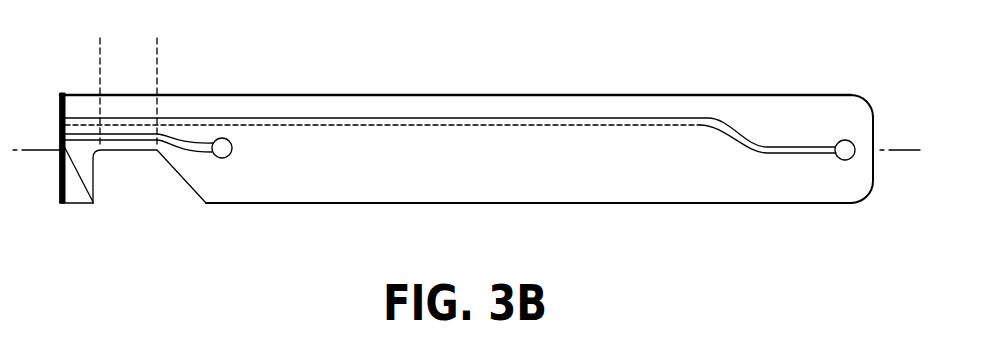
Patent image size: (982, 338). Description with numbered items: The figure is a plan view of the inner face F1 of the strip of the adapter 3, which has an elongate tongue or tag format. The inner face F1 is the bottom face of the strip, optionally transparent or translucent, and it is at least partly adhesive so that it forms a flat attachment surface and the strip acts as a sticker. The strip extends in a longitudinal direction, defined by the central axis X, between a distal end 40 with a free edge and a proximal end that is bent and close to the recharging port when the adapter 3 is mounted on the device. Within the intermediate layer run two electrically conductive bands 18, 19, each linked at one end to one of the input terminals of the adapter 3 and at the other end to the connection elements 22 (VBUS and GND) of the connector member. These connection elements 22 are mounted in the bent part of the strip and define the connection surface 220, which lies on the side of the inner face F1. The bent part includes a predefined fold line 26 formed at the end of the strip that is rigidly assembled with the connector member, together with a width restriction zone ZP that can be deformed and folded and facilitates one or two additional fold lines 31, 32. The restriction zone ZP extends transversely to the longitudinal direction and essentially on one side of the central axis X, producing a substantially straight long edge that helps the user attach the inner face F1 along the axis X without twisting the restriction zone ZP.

The adapter 3 is at (486, 170).
The electrically conductive band 18 is at (204, 156).
The electrically conductive band 19 is at (475, 122).
The connector element 22 is at (66, 117).
The predefined fold line 26 is at (58, 205).
The additional fold line 31 is at (103, 62).
The additional fold line 32 is at (160, 72).
The distal end 40 is at (877, 121).
The connection surface 220 is at (93, 205).
The width restriction zone ZP is at (127, 145).
The inner face F1 is at (675, 190).
The central axis X is at (890, 160).